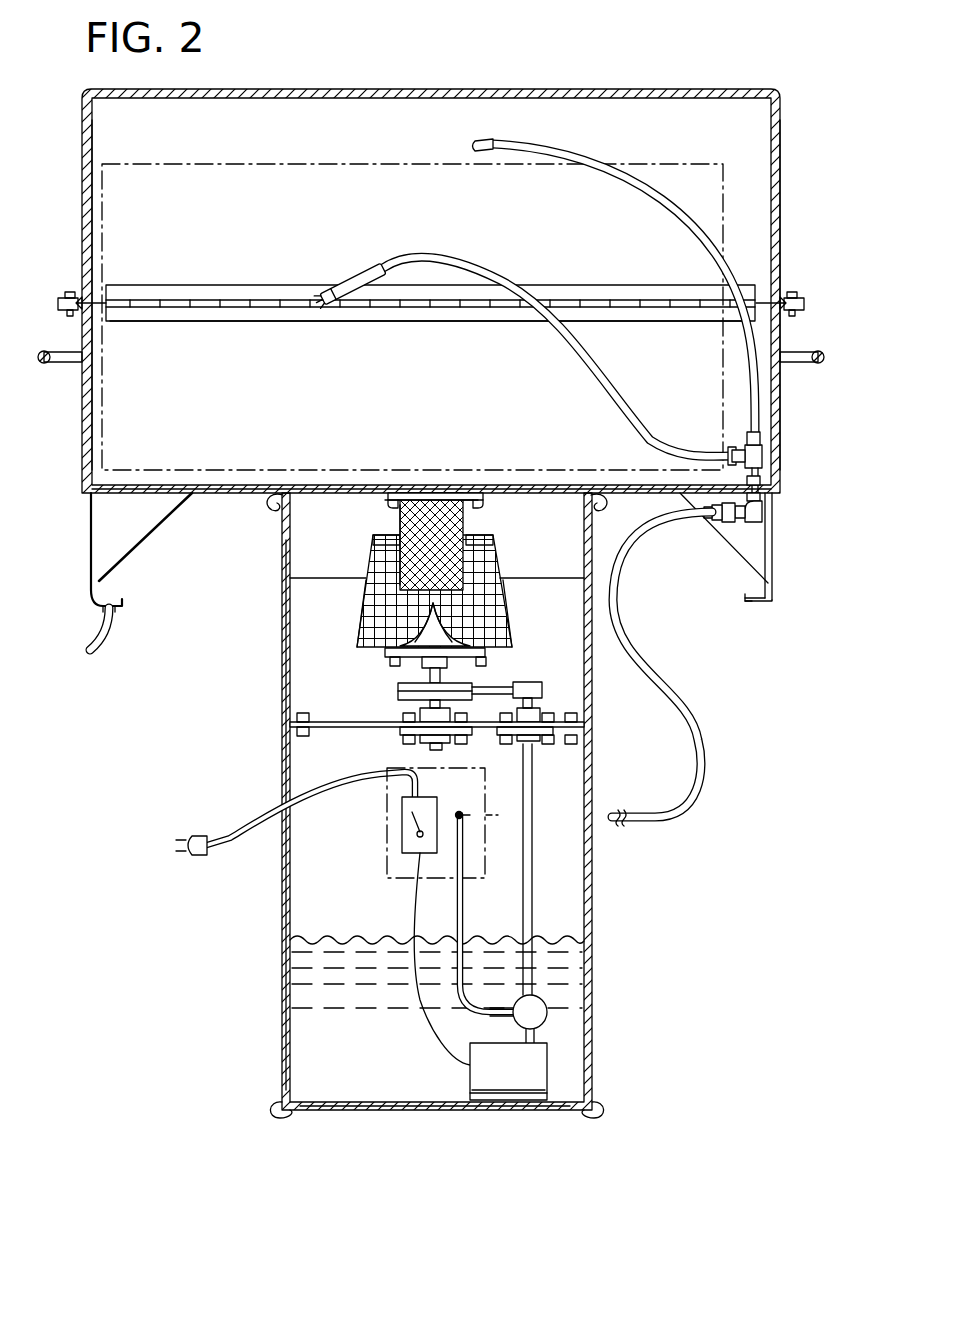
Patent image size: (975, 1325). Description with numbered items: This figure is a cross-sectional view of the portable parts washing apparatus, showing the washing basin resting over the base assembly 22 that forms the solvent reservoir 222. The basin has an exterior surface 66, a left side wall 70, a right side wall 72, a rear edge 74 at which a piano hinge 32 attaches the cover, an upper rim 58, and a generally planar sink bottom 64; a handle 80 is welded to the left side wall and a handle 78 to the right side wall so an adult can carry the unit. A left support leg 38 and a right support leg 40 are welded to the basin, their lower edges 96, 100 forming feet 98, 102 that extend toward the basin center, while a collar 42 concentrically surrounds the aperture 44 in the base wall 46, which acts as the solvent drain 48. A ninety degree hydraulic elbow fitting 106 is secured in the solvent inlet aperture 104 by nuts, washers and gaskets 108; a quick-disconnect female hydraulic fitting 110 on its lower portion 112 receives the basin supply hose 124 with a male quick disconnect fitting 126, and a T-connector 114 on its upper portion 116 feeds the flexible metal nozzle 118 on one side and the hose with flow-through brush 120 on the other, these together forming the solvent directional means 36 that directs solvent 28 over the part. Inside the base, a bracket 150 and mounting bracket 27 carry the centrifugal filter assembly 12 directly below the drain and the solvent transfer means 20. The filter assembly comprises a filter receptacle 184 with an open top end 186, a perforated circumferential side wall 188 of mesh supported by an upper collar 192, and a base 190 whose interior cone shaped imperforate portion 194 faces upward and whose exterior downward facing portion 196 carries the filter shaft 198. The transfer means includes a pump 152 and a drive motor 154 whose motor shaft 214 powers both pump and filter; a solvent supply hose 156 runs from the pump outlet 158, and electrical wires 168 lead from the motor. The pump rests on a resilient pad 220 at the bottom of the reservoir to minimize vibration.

The centrifugal filter assembly 12 is at (334, 619).
The solvent transfer means 20 is at (556, 1047).
The reservoir tank 22 is at (306, 1024).
The mounting bracket 27 is at (330, 728).
The solvent 28 is at (306, 1053).
The piano hinge 32 is at (570, 299).
The solvent directional means 36 is at (578, 363).
The left support leg 38 is at (91, 560).
The right support leg 40 is at (774, 564).
The collar 42 is at (372, 537).
The aperture 44 is at (430, 484).
The base wall 46 is at (171, 488).
The solvent drain 48 is at (434, 520).
The support bar 58 is at (248, 284).
The sink bottom 64 is at (206, 494).
The exterior surface 66 is at (82, 408).
The left side wall 70 is at (84, 455).
The right side wall 72 is at (782, 388).
The rear edge 74 is at (424, 322).
The handle 78 is at (816, 352).
The handle 80 is at (42, 352).
The lower edge 96 is at (103, 622).
The foot 98 is at (102, 640).
The lower edge 100 is at (769, 602).
The foot 102 is at (749, 601).
The solvent inlet aperture 104 is at (768, 481).
The ninety degree hydraulic elbow fitting 106 is at (747, 525).
The nuts, washers and solvent-resistant gaskets 108 is at (766, 496).
The quick-disconnect female hydraulic fitting 110 is at (715, 523).
The lower portion 112 is at (731, 524).
The T-connector 114 is at (745, 452).
The upper portion 116 is at (763, 506).
The flexible metal nozzle 118 is at (585, 140).
The hose with flow-through brush 120 is at (350, 278).
The basin supply hose 124 is at (700, 755).
The male hydraulic quick disconnect fitting 126 is at (707, 521).
The bracket 150 is at (340, 730).
The pump 152 is at (548, 1012).
The drive motor 154 is at (532, 1072).
The solvent supply hose 156 is at (466, 897).
The outlet 158 is at (511, 1020).
The electrical wires 168 is at (414, 907).
The filter receptacle 184 is at (364, 592).
The open top end 186 is at (398, 536).
The perforated circumferential side wall 188 is at (362, 611).
The base 190 is at (405, 638).
The upper collar 192 is at (396, 503).
The cone shaped imperforate portion 194 is at (420, 665).
The downward facing portion 196 is at (545, 684).
The filter shaft 198 is at (398, 690).
The motor shaft 214 is at (536, 852).
The resilient solvent resistant pad 220 is at (492, 1100).
The solvent reservoir 222 is at (330, 1102).